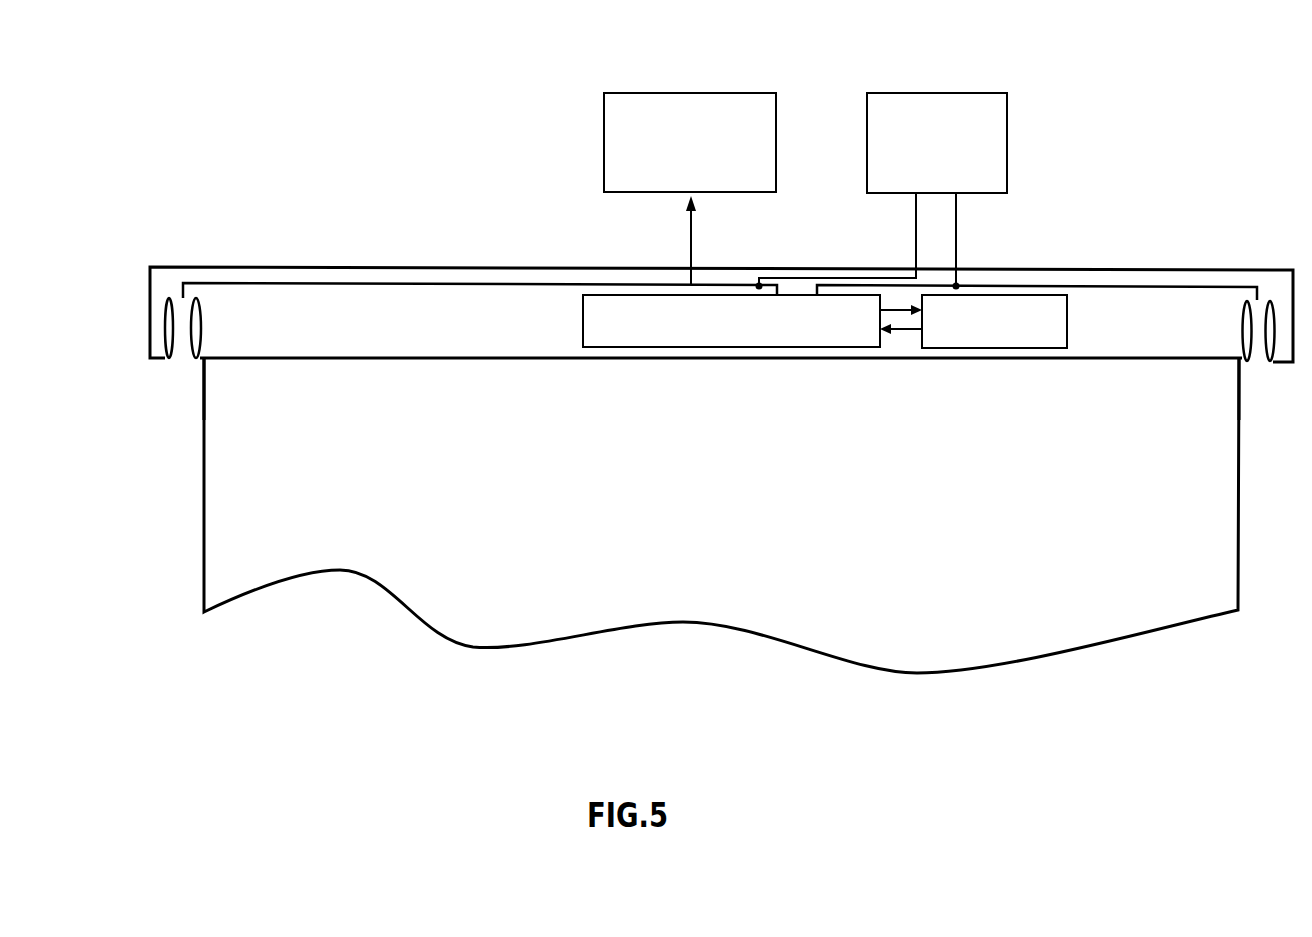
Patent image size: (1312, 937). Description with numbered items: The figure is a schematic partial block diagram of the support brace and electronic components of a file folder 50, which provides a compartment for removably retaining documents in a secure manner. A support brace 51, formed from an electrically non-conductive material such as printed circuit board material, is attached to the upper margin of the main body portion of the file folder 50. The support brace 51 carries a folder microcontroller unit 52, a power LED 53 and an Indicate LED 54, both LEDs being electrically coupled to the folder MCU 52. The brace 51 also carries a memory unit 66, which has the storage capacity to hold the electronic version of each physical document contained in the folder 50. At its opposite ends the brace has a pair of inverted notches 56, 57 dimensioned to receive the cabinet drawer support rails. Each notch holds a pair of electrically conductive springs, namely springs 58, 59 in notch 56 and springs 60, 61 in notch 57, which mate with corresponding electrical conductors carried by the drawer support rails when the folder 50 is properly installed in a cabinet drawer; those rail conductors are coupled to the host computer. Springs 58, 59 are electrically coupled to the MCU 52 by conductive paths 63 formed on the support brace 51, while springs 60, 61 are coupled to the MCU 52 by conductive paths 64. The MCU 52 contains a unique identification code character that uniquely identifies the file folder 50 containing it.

The file folder 50 is at (921, 466).
The support brace 51 is at (367, 256).
The folder microcontroller unit 52 is at (775, 340).
The power LED 53 is at (923, 102).
The Indicate LED 54 is at (629, 110).
The inverted notch 56 is at (179, 348).
The inverted notch 57 is at (1257, 355).
The electrically conductive spring 58 is at (168, 322).
The electrically conductive spring 59 is at (198, 328).
The electrically conductive spring 60 is at (1242, 322).
The electrically conductive spring 61 is at (1270, 300).
The conductive paths 63 is at (338, 285).
The conductive paths 64 is at (1172, 287).
The memory unit 66 is at (958, 340).